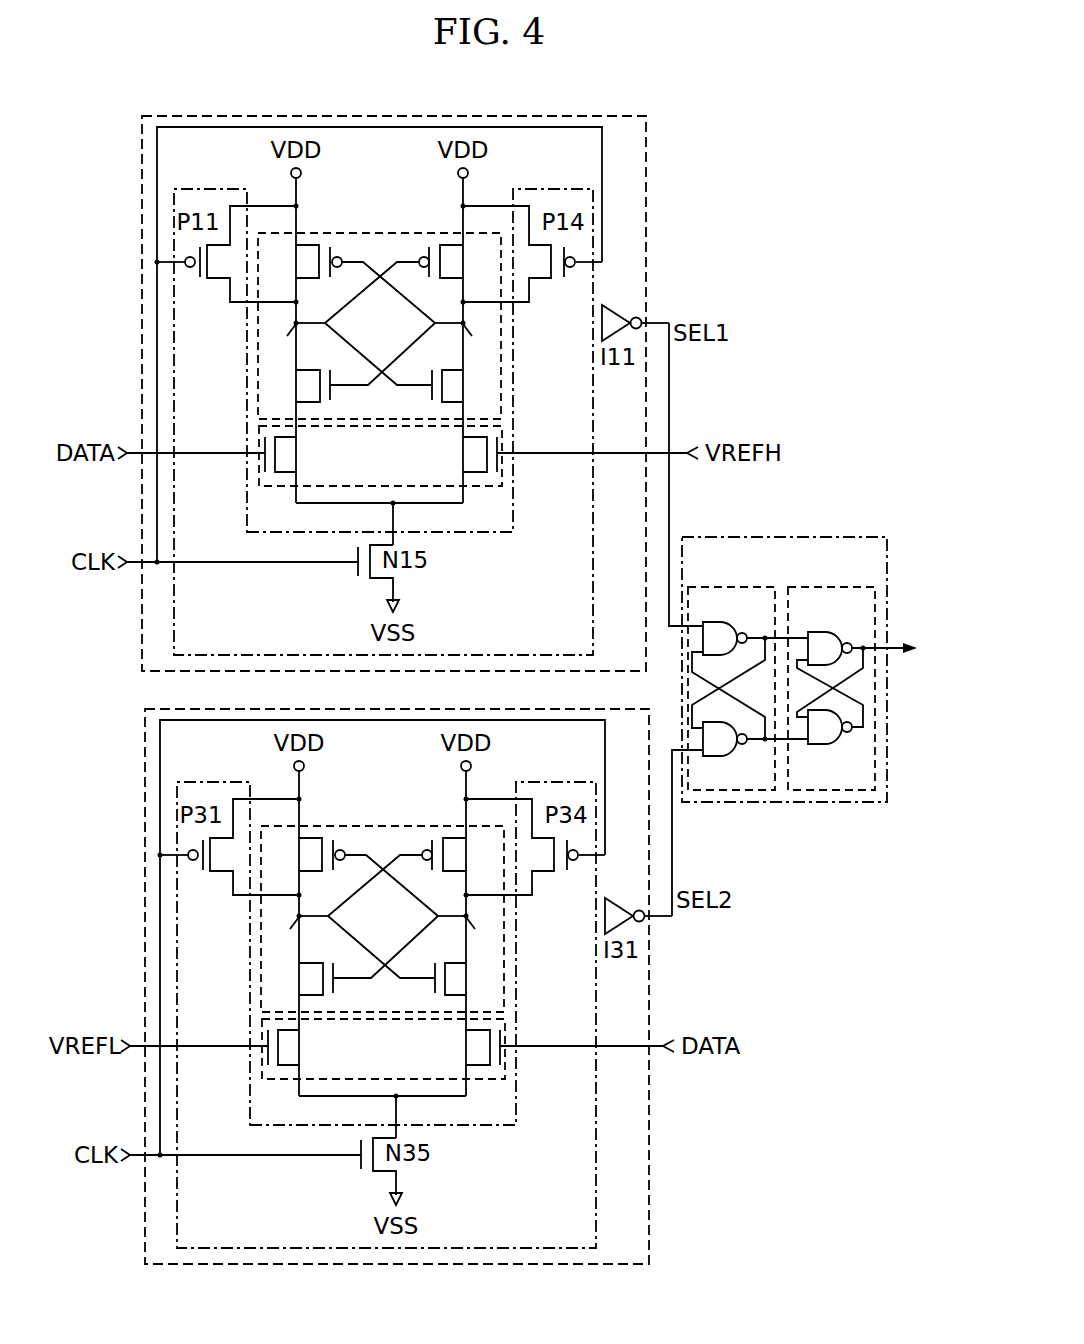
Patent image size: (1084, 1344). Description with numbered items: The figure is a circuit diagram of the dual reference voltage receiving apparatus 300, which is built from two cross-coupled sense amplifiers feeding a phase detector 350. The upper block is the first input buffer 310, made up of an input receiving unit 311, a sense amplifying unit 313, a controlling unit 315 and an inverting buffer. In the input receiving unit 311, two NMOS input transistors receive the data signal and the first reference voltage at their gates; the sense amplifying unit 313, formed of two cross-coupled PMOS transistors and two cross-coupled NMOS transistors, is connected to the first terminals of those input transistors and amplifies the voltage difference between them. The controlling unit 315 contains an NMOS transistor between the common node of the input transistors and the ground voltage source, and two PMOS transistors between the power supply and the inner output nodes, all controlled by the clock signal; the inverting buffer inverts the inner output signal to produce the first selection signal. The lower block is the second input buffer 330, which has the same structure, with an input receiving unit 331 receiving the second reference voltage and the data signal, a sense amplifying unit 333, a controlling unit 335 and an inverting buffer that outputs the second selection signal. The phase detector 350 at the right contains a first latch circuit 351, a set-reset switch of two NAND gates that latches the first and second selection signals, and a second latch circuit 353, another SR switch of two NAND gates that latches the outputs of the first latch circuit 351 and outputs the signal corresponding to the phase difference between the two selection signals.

The dual reference voltage receiving apparatus 300 is at (706, 95).
The first input buffer 310 is at (142, 182).
The input receiving unit 311 is at (486, 488).
The sense amplifying unit 313 is at (380, 232).
The controlling unit 315 is at (593, 598).
The second input buffer 330 is at (362, 986).
The input receiving unit 331 is at (388, 1071).
The sense amplifying unit 333 is at (382, 891).
The controlling unit 335 is at (413, 1015).
The phase detector 350 is at (810, 536).
The first latch circuit 351 is at (747, 586).
The second latch circuit 353 is at (838, 586).